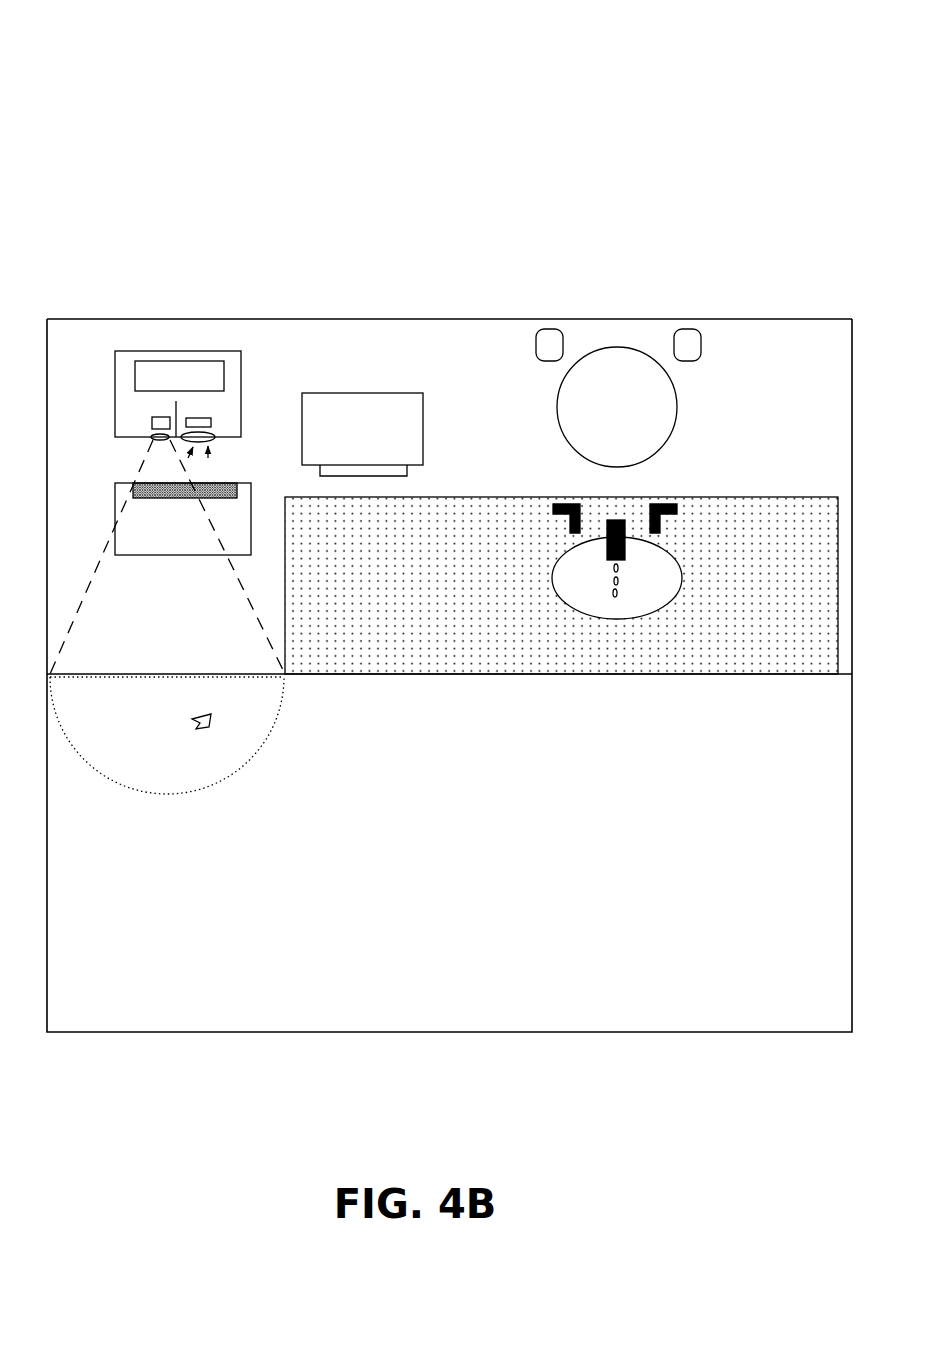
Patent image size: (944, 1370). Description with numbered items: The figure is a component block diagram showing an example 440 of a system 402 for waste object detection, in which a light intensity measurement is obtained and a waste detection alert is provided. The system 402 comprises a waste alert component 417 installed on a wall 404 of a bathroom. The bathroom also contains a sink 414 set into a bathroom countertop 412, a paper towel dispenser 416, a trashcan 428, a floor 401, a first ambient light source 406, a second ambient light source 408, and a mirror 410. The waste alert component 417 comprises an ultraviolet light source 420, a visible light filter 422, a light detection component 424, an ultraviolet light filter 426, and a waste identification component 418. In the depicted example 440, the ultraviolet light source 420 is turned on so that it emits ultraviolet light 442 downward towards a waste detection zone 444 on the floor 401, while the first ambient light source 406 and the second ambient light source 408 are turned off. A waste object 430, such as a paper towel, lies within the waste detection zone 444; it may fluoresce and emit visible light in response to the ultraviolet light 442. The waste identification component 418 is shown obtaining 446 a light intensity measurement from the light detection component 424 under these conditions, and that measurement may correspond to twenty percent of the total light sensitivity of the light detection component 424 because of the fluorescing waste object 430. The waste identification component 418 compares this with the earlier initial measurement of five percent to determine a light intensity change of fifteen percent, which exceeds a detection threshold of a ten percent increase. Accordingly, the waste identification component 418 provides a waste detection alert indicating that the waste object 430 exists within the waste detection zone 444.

The example 440 is at (206, 62).
The floor 401 is at (694, 798).
The system 402 is at (191, 298).
The wall 404 is at (349, 318).
The first ambient light source 406 is at (545, 328).
The second ambient light source 408 is at (688, 327).
The mirror 410 is at (593, 350).
The bathroom countertop 412 is at (718, 496).
The sink 414 is at (596, 488).
The paper towel dispenser 416 is at (335, 392).
The waste alert component 417 is at (242, 358).
The waste identification component 418 is at (142, 361).
The ultraviolet light source 420 is at (158, 416).
The visible light filter 422 is at (153, 434).
The light detection component 424 is at (208, 417).
The ultraviolet light filter 426 is at (213, 434).
The trashcan 428 is at (123, 482).
The waste object 430 is at (198, 725).
The ultraviolet light 442 is at (91, 588).
The waste detection zone 444 is at (233, 773).
The obtaining 446 is at (226, 464).